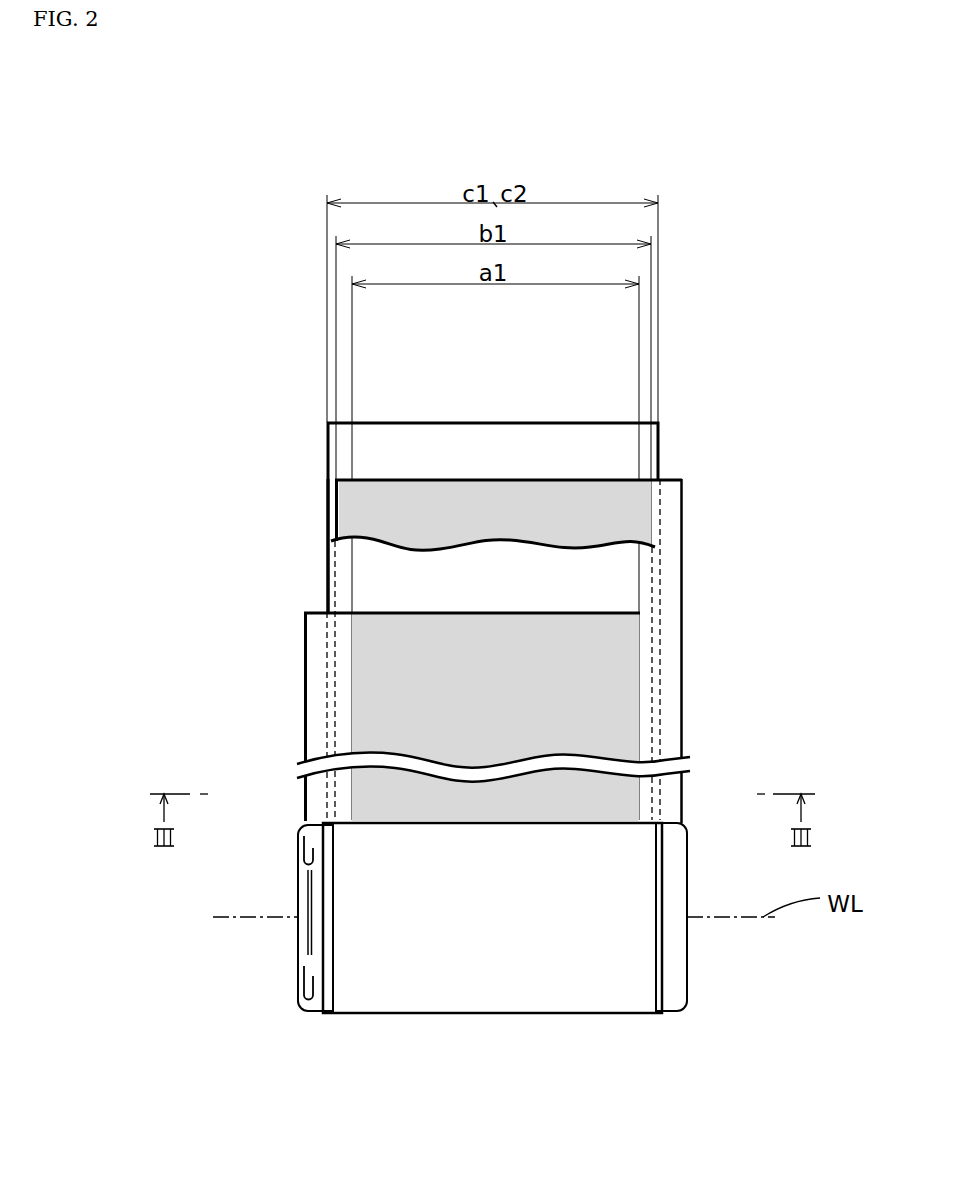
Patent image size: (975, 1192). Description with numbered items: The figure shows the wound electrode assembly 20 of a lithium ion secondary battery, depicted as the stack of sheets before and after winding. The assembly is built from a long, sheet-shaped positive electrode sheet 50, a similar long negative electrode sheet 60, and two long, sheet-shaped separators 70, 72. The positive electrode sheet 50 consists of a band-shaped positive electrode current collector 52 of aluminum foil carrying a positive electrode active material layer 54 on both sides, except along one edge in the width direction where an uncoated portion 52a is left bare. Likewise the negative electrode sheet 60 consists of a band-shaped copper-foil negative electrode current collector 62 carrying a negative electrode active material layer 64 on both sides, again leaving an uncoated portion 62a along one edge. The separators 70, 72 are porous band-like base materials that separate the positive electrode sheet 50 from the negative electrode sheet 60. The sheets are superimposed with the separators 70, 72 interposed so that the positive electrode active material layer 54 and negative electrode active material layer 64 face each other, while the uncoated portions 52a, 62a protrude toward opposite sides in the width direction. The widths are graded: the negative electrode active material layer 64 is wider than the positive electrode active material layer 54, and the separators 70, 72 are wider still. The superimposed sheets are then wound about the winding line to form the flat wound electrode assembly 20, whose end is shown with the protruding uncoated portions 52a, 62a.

The wound electrode assembly 20 is at (528, 985).
The positive electrode sheet 50 is at (300, 662).
The positive electrode current collector 52 is at (483, 611).
The uncoated portion 52a is at (320, 730).
The positive electrode active material layer 54 is at (383, 708).
The negative electrode sheet 60 is at (688, 490).
The negative electrode current collector 62 is at (483, 478).
The uncoated portion 62a is at (668, 537).
The negative electrode active material layer 64 is at (587, 497).
The separator 70 is at (343, 585).
The separator 72 is at (345, 450).